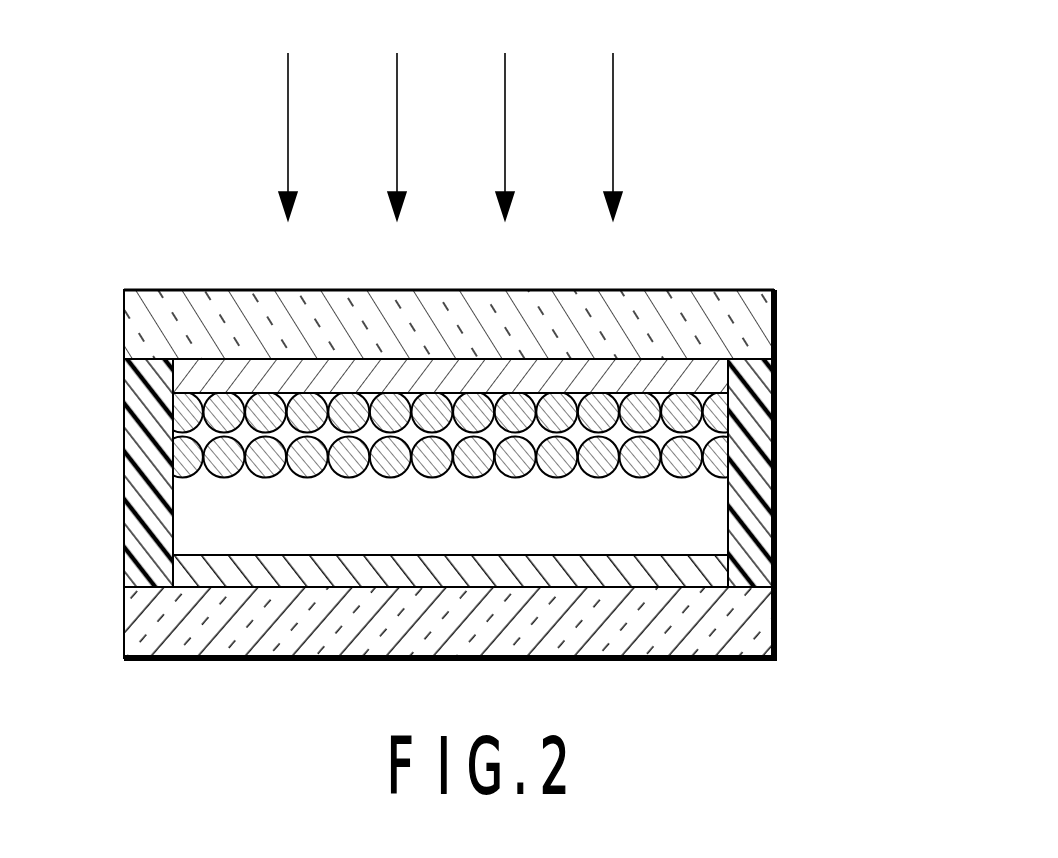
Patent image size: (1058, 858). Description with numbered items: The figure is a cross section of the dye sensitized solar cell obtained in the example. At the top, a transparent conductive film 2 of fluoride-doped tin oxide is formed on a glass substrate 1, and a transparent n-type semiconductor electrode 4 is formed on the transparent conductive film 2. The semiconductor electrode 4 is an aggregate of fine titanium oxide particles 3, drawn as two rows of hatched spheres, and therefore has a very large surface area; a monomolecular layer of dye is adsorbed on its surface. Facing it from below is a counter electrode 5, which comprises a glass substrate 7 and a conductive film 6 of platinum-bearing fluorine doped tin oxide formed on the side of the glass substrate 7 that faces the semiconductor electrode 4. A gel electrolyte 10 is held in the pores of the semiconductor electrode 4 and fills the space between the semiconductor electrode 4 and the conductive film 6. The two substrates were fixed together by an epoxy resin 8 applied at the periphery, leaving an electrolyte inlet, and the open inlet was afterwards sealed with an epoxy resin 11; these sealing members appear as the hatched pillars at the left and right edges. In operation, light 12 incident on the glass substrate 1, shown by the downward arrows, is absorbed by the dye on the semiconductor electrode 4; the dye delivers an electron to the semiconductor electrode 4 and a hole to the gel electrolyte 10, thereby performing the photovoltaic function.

The glass substrate 1 is at (760, 312).
The transparent conductive film 2 is at (717, 380).
The titanium oxide particles 3 is at (718, 453).
The n-type semiconductor electrode 4 is at (850, 398).
The counter electrode 5 is at (850, 550).
The conductive film 6 is at (718, 567).
The glass substrate 7 is at (740, 627).
The epoxy resin 8 is at (148, 465).
The gel electrolyte 10 is at (198, 520).
The epoxy resin 11 is at (748, 513).
The light 12 is at (630, 134).